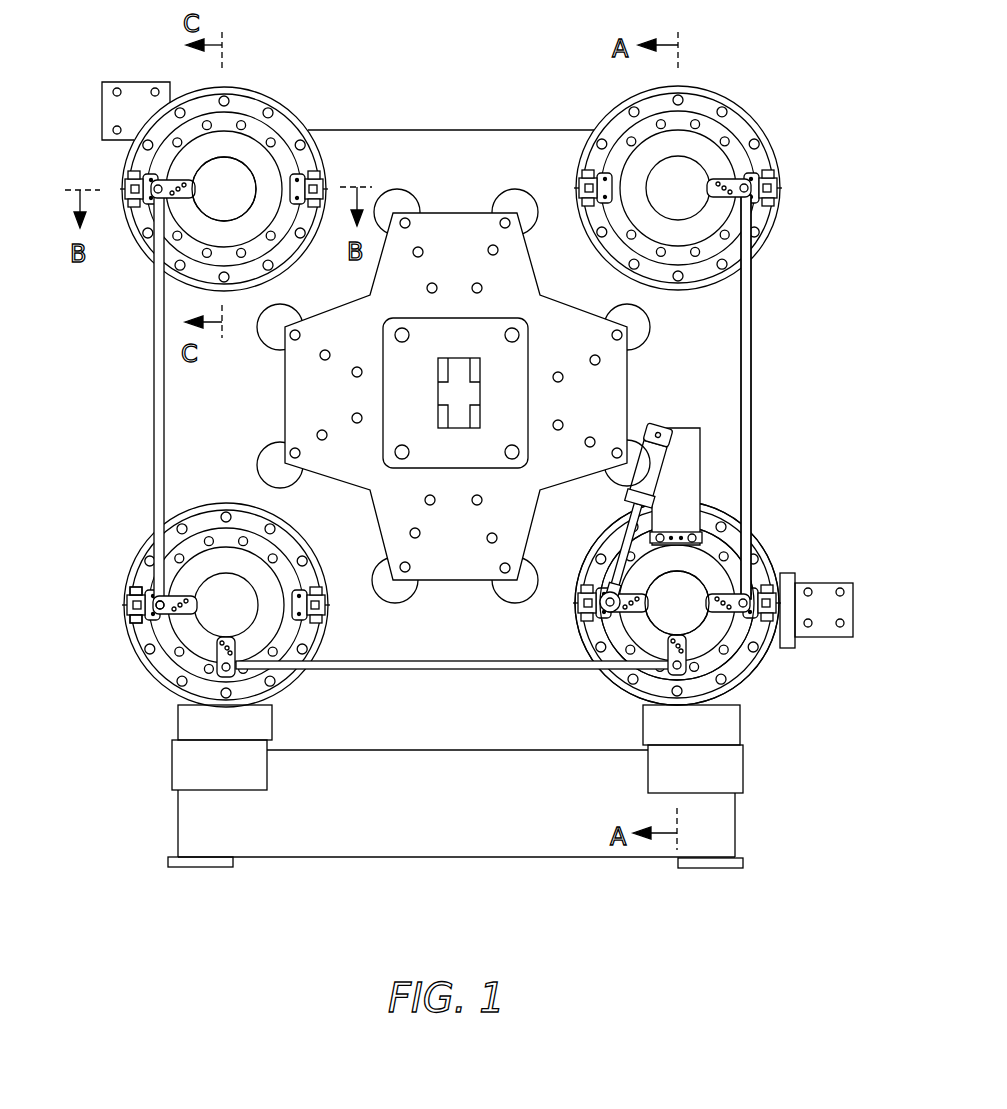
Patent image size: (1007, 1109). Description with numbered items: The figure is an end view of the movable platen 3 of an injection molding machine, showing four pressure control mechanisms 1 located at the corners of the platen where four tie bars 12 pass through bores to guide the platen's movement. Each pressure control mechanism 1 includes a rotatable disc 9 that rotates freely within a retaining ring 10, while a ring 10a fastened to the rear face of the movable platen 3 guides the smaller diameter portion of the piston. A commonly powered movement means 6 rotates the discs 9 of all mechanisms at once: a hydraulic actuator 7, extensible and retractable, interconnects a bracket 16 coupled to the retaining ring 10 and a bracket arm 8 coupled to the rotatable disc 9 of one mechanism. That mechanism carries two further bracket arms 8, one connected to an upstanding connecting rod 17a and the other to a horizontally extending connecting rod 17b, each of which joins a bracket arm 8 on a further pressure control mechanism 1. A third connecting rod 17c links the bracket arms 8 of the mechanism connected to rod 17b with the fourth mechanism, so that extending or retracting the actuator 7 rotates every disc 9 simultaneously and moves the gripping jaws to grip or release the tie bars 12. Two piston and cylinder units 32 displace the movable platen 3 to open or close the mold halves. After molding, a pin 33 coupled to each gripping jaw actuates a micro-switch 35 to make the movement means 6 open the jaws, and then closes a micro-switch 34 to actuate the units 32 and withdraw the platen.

The pressure control mechanism 1 is at (791, 88).
The movable platen 3 is at (362, 158).
The movement means 6 is at (830, 412).
The hydraulic actuator 7 is at (650, 460).
The bracket arm 8 is at (156, 188).
The rotatable disc 9 is at (732, 640).
The retaining ring 10 is at (722, 660).
The ring 10a is at (645, 688).
The tie bar 12 is at (224, 182).
The bracket 16 is at (692, 455).
The upstanding connecting rod 17a is at (751, 355).
The horizontally extending connecting rod 17b is at (368, 669).
The third connecting rod 17c is at (153, 440).
The piston and cylinder unit 32 is at (102, 114).
The pin 33 is at (154, 606).
The micro-switch 34 is at (137, 630).
The micro-switch 35 is at (136, 588).